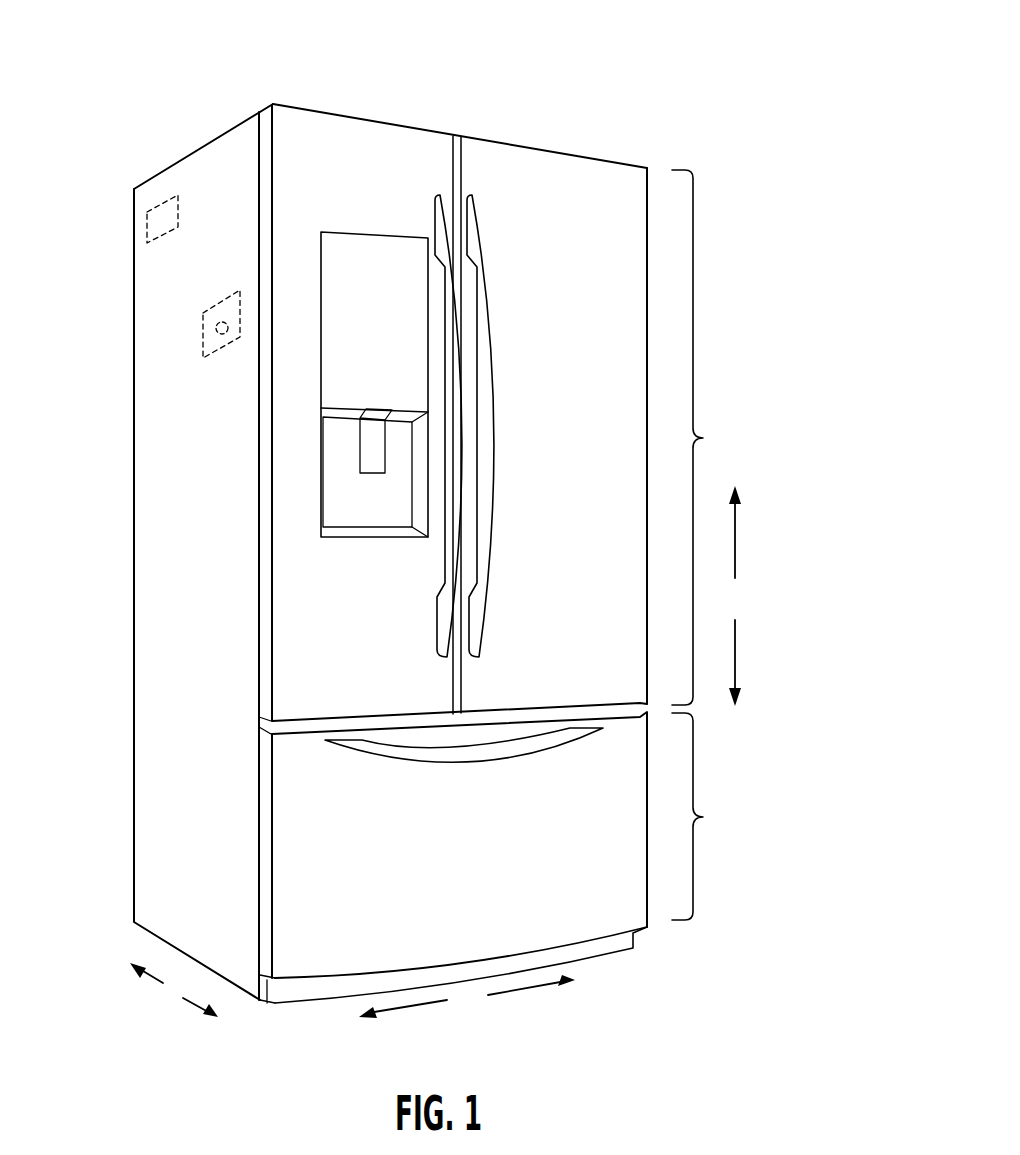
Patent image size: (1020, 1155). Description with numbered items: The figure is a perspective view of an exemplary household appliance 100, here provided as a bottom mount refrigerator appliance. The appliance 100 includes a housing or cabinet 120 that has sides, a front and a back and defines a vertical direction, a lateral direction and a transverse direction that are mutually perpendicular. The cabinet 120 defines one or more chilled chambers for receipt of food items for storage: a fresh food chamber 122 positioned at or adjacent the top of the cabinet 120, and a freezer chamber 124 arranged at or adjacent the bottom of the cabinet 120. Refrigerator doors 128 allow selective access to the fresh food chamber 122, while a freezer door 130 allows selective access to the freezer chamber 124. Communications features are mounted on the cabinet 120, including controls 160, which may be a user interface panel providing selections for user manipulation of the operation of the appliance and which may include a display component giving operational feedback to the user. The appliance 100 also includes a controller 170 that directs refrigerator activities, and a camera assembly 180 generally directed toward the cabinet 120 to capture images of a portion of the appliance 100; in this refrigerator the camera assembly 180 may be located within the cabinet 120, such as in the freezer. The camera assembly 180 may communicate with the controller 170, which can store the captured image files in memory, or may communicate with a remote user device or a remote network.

The household appliance 100 is at (642, 84).
The cabinet 120 is at (200, 170).
The fresh food chamber 122 is at (710, 437).
The freezer chamber 124 is at (711, 816).
The refrigerator doors 128 is at (375, 198).
The freezer door 130 is at (509, 857).
The controls 160 is at (321, 291).
The controller 170 is at (147, 228).
The camera assembly 180 is at (197, 340).